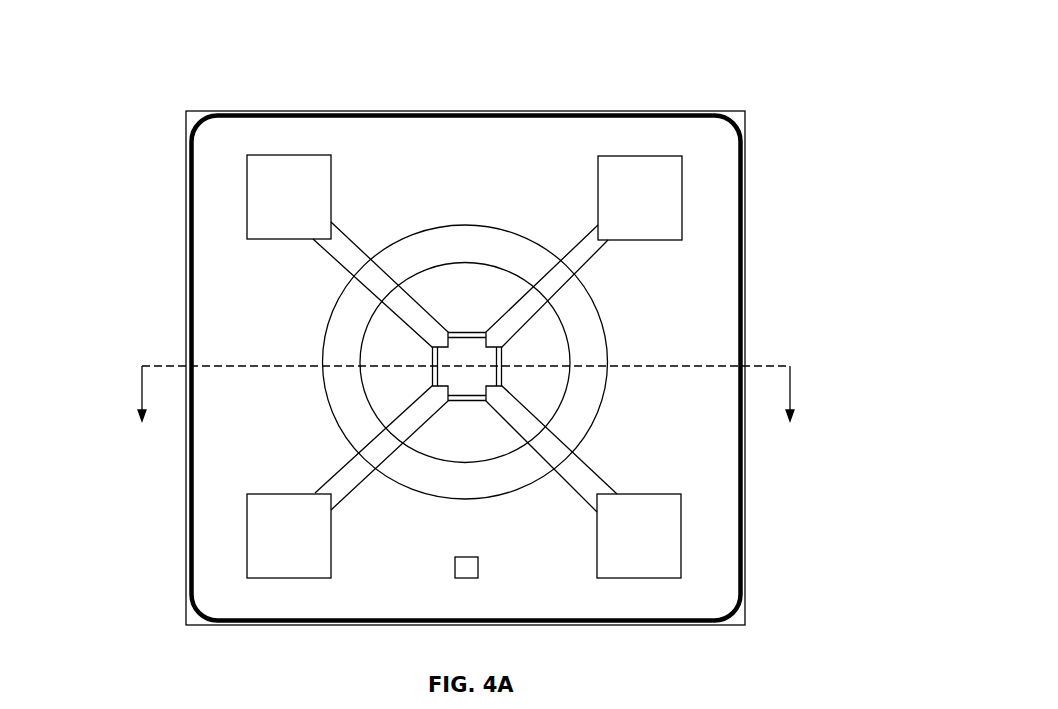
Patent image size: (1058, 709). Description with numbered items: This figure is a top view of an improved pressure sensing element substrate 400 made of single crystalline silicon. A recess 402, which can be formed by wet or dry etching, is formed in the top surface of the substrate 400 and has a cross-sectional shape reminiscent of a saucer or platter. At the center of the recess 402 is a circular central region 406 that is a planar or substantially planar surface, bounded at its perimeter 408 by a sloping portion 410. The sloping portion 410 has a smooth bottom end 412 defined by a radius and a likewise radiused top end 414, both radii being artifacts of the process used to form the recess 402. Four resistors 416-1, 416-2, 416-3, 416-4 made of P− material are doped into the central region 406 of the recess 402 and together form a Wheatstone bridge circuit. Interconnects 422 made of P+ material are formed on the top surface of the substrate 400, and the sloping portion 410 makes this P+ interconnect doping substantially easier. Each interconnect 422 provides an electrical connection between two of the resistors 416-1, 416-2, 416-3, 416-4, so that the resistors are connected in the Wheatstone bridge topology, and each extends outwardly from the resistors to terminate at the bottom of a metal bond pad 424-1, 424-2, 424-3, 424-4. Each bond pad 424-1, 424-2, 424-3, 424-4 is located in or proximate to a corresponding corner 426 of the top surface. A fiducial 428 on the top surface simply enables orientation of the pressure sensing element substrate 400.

The pressure sensing element substrate 400 is at (803, 95).
The recess 402 is at (548, 380).
The central region 406 is at (547, 330).
The perimeter 408 is at (560, 406).
The sloping portion 410 is at (457, 485).
The bottom end 412 is at (420, 461).
The top end 414 is at (505, 491).
The resistor 416-1 is at (542, 358).
The resistor 416-2 is at (466, 331).
The resistor 416-3 is at (435, 362).
The resistor 416-4 is at (470, 401).
The interconnect 422 is at (342, 246).
The bond pad 424-1 is at (657, 533).
The bond pad 424-2 is at (258, 200).
The bond pad 424-3 is at (255, 538).
The bond pad 424-4 is at (665, 183).
The corner 426 is at (207, 112).
The fiducial 428 is at (468, 578).